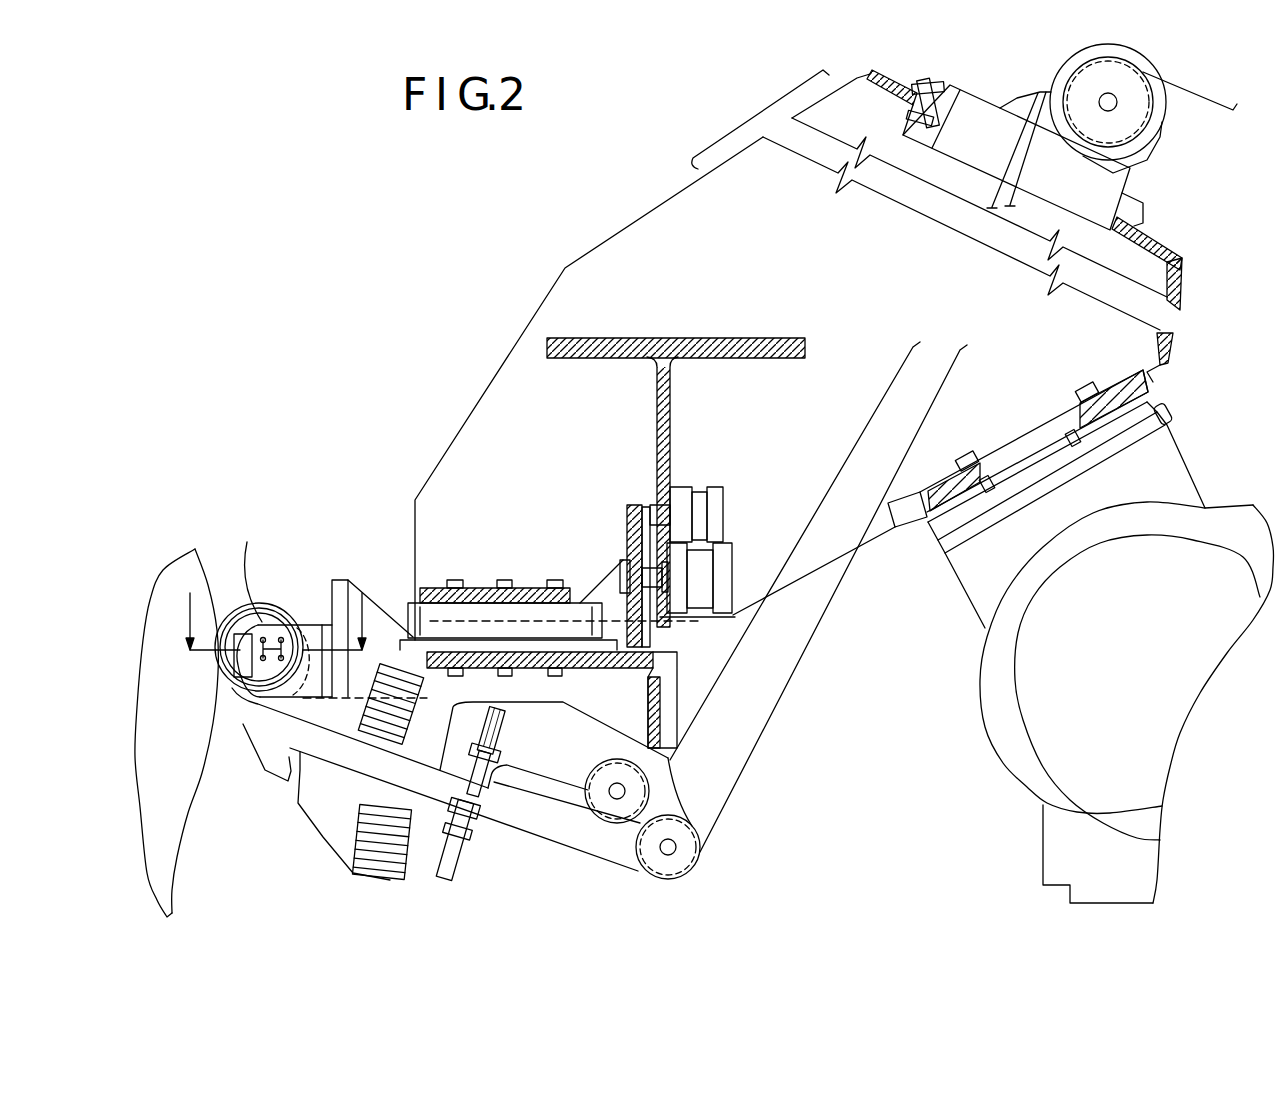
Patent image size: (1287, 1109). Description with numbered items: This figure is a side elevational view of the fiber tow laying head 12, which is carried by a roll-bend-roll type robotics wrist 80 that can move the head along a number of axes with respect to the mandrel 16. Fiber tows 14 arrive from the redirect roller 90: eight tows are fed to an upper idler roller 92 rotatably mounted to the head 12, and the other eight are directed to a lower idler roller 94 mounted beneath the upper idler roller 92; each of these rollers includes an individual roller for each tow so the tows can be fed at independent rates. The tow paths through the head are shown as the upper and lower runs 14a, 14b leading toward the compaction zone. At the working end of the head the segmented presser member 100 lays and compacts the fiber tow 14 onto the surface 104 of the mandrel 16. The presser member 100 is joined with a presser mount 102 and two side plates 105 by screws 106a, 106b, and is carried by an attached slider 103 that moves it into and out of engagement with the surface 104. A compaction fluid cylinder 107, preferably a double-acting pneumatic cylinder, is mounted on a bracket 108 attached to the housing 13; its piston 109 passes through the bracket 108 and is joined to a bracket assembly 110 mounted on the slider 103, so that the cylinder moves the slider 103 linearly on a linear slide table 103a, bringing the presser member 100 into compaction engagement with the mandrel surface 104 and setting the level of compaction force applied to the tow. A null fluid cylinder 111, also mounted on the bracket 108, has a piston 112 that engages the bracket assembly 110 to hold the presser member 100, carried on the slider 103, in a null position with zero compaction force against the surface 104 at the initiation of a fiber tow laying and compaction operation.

The fiber tow laying head 12 is at (673, 180).
The housing 13 is at (478, 402).
The fiber tows 14 is at (1197, 95).
The upper arm 14a is at (555, 806).
The lower arm 14b is at (622, 866).
The mandrel 16 is at (176, 772).
The robotics wrist 80 is at (1002, 769).
The redirect roller 90 is at (1125, 60).
The upper idler roller 92 is at (593, 767).
The lower idler roller 94 is at (695, 868).
The segmented presser member 100 is at (223, 678).
The presser mount 102 is at (312, 623).
The slider 103 is at (350, 580).
The linear slide table 103a is at (593, 670).
The surface 104 is at (197, 787).
The side plates 105 is at (243, 612).
The screw 106a is at (264, 638).
The screw 106b is at (263, 569).
The compaction fluid cylinder 107 is at (740, 628).
The bracket 108 is at (672, 410).
The piston 109 is at (655, 628).
The bracket assembly 110 is at (682, 640).
The null fluid cylinder 111 is at (690, 480).
The piston 112 is at (655, 505).